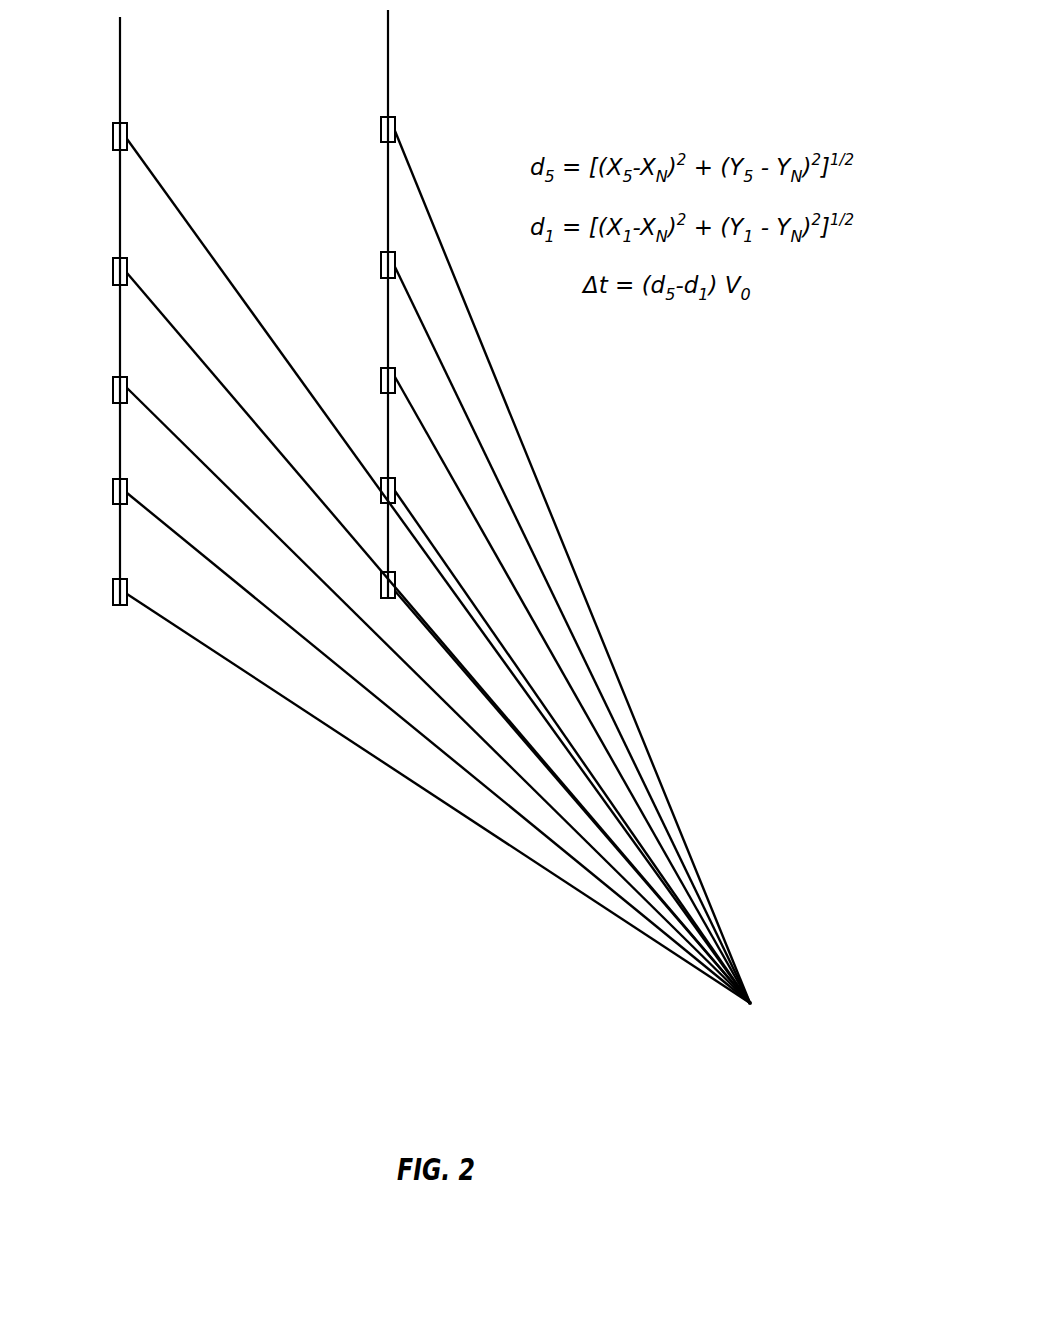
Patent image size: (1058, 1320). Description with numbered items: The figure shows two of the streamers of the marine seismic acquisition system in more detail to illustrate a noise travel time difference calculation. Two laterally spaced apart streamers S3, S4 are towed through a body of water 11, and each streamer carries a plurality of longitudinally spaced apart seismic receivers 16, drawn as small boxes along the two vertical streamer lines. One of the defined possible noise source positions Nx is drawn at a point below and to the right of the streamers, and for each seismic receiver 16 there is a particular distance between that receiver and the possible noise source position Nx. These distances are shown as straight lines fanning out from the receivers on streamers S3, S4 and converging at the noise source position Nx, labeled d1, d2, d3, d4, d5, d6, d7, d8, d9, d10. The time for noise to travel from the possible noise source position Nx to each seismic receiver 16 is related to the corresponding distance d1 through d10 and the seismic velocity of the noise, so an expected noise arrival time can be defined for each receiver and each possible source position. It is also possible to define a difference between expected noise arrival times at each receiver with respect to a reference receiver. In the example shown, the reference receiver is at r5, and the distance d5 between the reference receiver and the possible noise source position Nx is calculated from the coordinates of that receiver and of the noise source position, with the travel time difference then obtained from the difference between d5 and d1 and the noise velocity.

The seismic receiver 16 is at (218, 350).
The body of water 11 is at (683, 433).
The streamer S3 is at (114, 606).
The streamer S4 is at (389, 117).
The distance d1 is at (572, 785).
The distance d2 is at (572, 733).
The distance d3 is at (572, 681).
The distance d4 is at (572, 629).
The distance d5 is at (572, 565).
The distance d6 is at (438, 787).
The distance d7 is at (438, 736).
The distance d8 is at (438, 685).
The distance d9 is at (438, 631).
The distance d10 is at (438, 562).
The reference receiver r5 is at (395, 118).
The possible noise source position Nx is at (788, 1043).